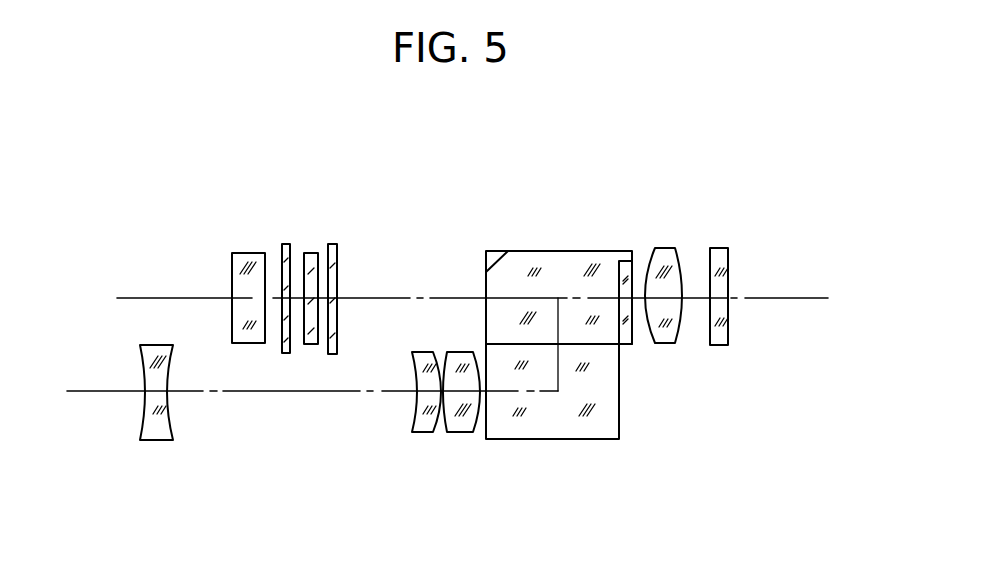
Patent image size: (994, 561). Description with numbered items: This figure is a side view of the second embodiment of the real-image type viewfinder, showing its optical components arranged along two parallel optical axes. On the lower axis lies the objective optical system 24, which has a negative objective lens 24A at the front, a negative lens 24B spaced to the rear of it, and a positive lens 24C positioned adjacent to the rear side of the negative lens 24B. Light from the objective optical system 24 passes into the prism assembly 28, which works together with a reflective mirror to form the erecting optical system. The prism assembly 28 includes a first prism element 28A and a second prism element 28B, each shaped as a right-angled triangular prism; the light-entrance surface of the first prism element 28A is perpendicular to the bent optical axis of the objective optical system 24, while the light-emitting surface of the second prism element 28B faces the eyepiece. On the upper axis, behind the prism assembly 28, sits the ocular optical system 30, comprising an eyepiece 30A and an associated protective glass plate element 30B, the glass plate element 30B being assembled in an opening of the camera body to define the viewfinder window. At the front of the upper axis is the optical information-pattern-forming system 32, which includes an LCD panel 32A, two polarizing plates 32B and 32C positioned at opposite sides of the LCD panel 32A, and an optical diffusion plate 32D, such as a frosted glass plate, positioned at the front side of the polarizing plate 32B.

The objective optical system 24 is at (293, 440).
The negative objective lens 24A is at (155, 441).
The negative lens 24B is at (421, 433).
The positive lens 24C is at (460, 433).
The prism assembly 28 is at (548, 228).
The first prism element 28A is at (558, 422).
The second prism element 28B is at (627, 335).
The ocular optical system 30 is at (693, 369).
The eyepiece 30A is at (662, 248).
The protective glass plate element 30B is at (730, 268).
The optical information-pattern-forming system 32 is at (240, 229).
The LCD panel 32A is at (309, 253).
The polarizing plate 32B is at (285, 244).
The polarizing plate 32C is at (338, 262).
The optical diffusion plate 32D is at (232, 268).